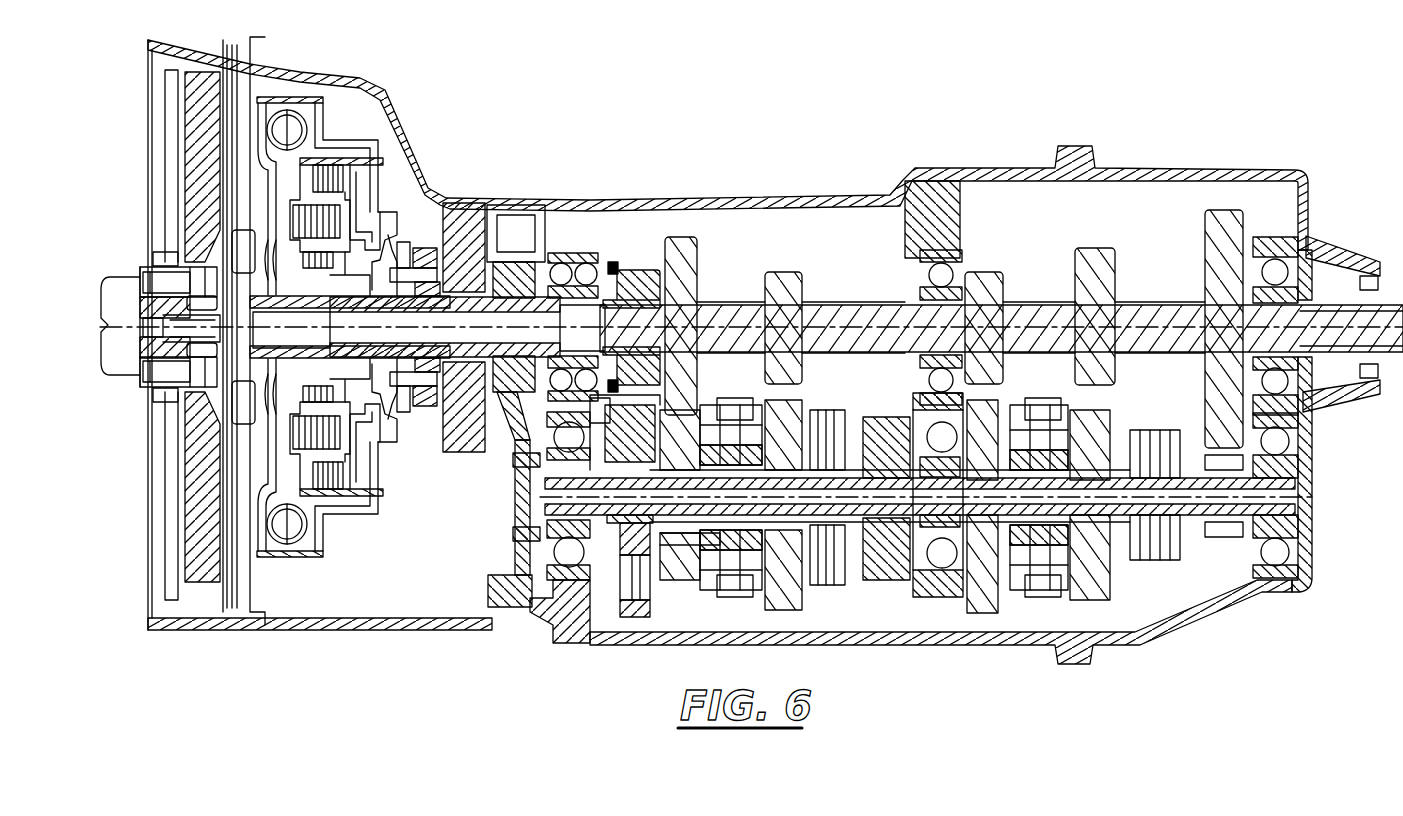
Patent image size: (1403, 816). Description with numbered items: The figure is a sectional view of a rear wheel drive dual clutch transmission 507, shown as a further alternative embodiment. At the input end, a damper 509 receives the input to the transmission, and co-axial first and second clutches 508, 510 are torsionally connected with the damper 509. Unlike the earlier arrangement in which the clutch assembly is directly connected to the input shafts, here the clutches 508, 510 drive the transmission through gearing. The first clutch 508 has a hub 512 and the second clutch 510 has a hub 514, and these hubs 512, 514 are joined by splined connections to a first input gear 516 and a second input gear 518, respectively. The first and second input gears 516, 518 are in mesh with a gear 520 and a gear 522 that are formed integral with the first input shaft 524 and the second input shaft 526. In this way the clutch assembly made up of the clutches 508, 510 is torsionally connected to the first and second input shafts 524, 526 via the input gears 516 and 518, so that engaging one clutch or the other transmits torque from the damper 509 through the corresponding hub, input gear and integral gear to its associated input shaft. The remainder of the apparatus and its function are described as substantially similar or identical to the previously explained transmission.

The dual clutch transmission 507 is at (598, 147).
The first clutch 508 is at (374, 218).
The damper 509 is at (267, 102).
The second clutch 510 is at (355, 165).
The hub 512 is at (390, 240).
The hub 514 is at (392, 327).
The first input gear 516 is at (512, 262).
The second input gear 518 is at (633, 278).
The gear 520 is at (513, 607).
The gear 522 is at (637, 618).
The first input shaft 524 is at (648, 520).
The second input shaft 526 is at (662, 458).